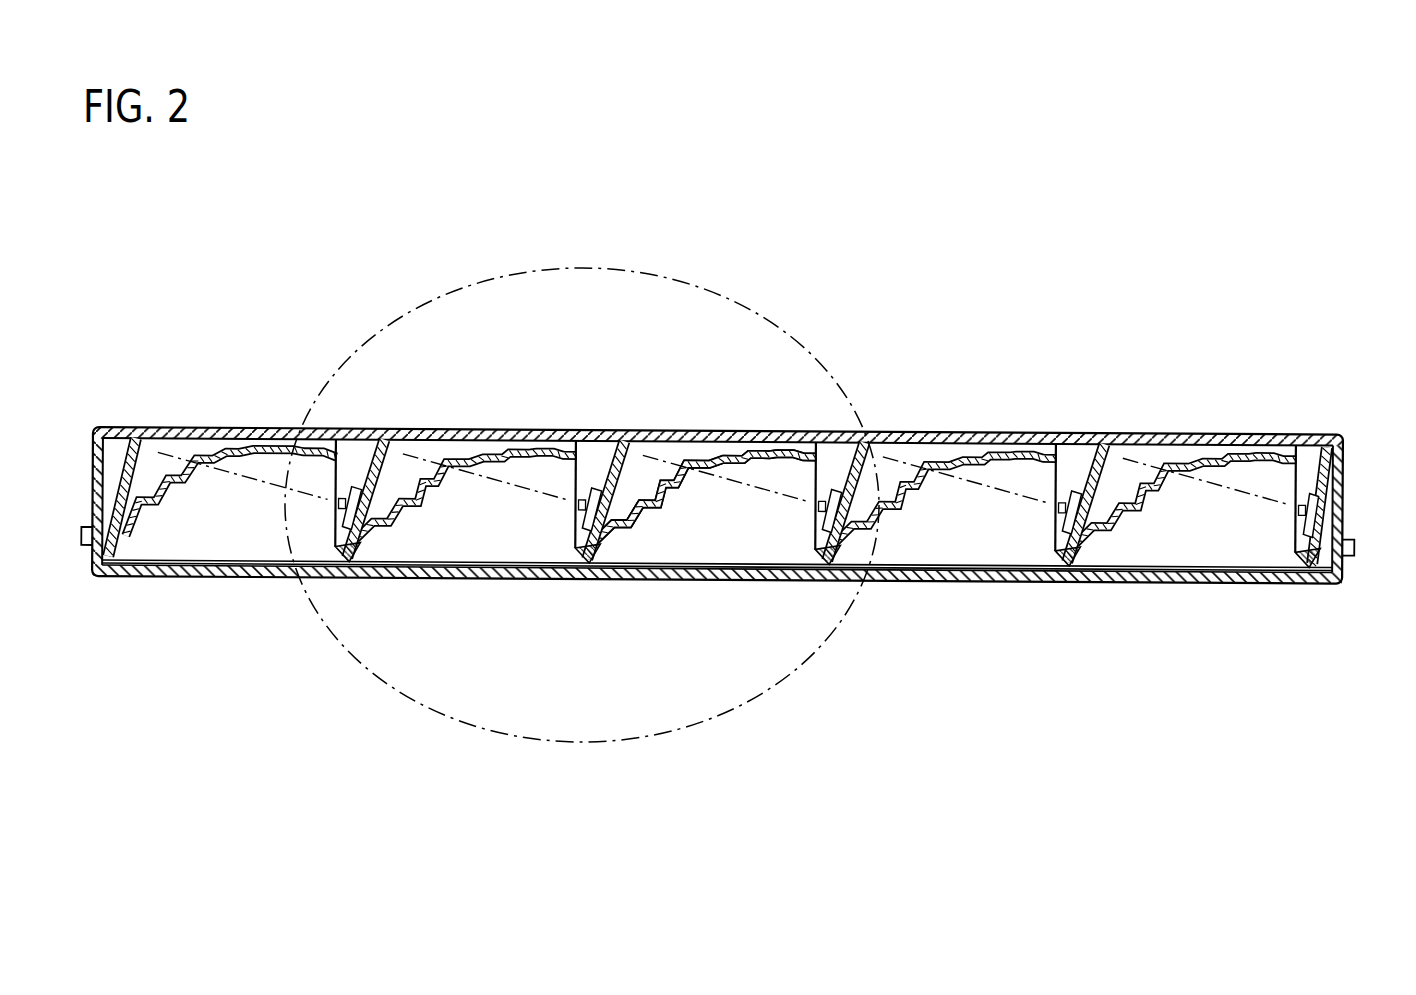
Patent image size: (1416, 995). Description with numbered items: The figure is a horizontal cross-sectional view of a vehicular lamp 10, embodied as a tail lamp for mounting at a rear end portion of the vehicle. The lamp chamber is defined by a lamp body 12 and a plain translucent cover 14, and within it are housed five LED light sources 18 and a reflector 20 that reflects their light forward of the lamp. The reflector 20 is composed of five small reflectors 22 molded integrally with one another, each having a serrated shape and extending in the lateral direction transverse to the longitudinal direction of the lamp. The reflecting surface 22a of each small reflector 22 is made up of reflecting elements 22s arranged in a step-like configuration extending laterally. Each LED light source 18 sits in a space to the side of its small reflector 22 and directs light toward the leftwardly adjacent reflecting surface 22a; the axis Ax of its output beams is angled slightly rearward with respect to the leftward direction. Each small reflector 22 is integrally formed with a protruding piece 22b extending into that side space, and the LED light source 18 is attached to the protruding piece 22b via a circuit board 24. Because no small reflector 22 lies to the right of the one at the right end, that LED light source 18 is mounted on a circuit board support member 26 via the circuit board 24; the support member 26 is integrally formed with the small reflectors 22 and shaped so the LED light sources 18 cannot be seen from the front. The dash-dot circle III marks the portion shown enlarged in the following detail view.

The vehicular lamp 10 is at (1093, 248).
The lamp body 12 is at (1226, 433).
The plain translucent cover 14 is at (1214, 586).
The LED light source 18 is at (1057, 510).
The reflector 20 is at (1022, 582).
The small reflector 22 is at (228, 447).
The reflecting surface 22a is at (655, 502).
The protruding piece 22b is at (1077, 487).
The reflecting element 22s is at (768, 458).
The circuit board 24 is at (1056, 457).
The circuit board support member 26 is at (1343, 508).
The light axis Ax is at (953, 472).
The section line III is at (478, 285).